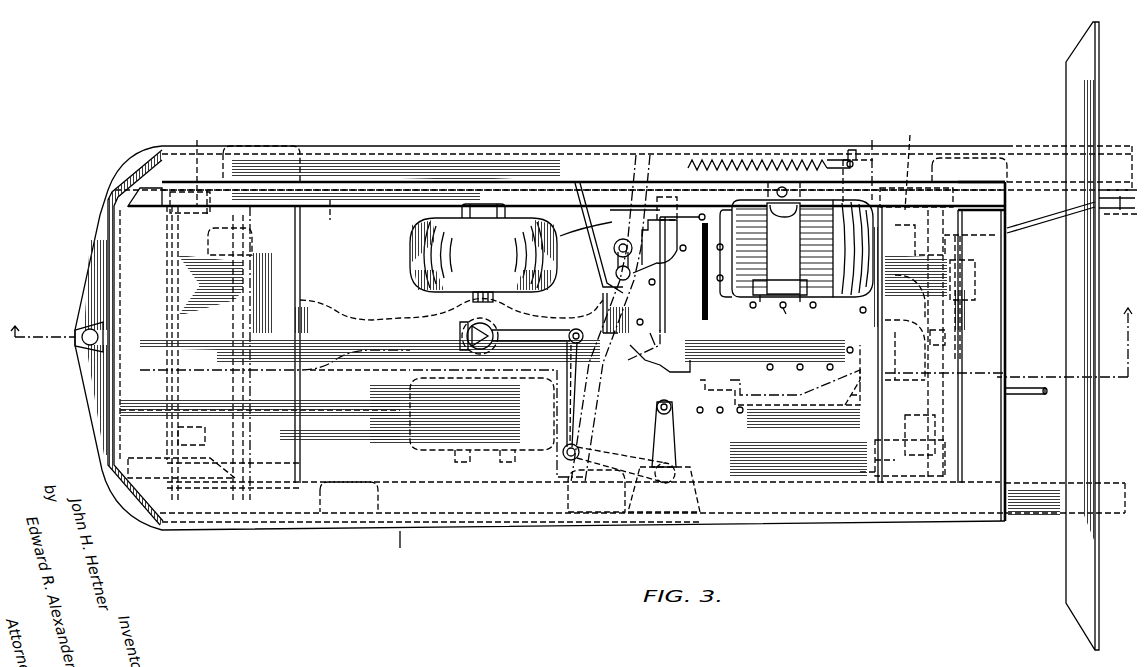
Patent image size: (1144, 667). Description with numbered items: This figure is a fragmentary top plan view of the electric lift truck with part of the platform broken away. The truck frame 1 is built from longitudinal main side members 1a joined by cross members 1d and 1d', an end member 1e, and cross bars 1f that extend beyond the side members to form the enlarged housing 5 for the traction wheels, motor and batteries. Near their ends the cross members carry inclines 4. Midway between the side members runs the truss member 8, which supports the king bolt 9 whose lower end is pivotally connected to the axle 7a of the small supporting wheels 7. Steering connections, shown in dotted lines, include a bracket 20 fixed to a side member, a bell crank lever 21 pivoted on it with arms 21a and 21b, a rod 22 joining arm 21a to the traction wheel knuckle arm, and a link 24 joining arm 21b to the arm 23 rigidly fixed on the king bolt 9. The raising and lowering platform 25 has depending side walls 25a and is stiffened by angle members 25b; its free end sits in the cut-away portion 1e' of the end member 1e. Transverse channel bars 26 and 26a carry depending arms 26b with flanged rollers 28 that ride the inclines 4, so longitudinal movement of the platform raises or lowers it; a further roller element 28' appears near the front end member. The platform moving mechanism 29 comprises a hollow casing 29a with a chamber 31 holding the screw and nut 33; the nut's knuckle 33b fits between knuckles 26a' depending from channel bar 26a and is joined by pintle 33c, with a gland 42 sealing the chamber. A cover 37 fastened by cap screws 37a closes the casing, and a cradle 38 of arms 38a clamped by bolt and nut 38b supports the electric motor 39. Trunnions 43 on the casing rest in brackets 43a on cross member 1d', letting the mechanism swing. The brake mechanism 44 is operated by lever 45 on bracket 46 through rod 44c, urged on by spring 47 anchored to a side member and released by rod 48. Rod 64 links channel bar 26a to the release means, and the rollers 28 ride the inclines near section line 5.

The truck frame 1 is at (1034, 490).
The main side member 1a is at (408, 152).
The cross member 1d is at (581, 332).
The cross member 1d' is at (610, 258).
The end member 1e is at (76, 347).
The cut-away portion 1e' is at (107, 337).
The cross bar 1f is at (1090, 580).
The incline 4 is at (547, 168).
The enlarged housing 5 is at (571, 341).
The supporting wheel 7 is at (410, 250).
The axle 7a is at (473, 298).
The truss member 8 is at (345, 320).
The king bolt 9 is at (460, 334).
The bracket 20 is at (700, 500).
The bell crank lever 21 is at (619, 404).
The arm of bell crank lever 21a is at (676, 445).
The arm of bell crank lever 21b is at (596, 491).
The rod 22 is at (1030, 397).
The arm 23 is at (540, 328).
The link 24 is at (560, 400).
The raising and lowering platform 25 is at (482, 420).
The depending side wall 25a is at (400, 548).
The angle member 25b is at (360, 492).
The channel bar 26 is at (178, 290).
The channel bar 26a is at (940, 345).
The knuckle 26a' is at (945, 297).
The depending arm 26b is at (252, 238).
The roller 28 is at (540, 300).
The front bracket 28' is at (145, 209).
The platform moving mechanism 29 is at (700, 305).
The hollow casing 29a is at (648, 358).
The chamber 31 is at (850, 398).
The nut 33 is at (915, 385).
The knuckle 33b is at (948, 335).
The pintle 33c is at (944, 369).
The cover 37 is at (800, 318).
The cap screw 37a is at (795, 319).
The cradle 38 is at (782, 239).
The cradle arm 38a is at (812, 305).
The clamping bolt and nut 38b is at (784, 187).
The electric motor 39 is at (853, 248).
The gland 42 is at (890, 348).
The trunnion 43 is at (636, 172).
The bracket 43a is at (610, 317).
The brake mechanism 44 is at (625, 240).
The rod 44c is at (616, 265).
The lever 45 is at (613, 248).
The bracket 46 is at (631, 274).
The spring 47 is at (735, 160).
The rod 48 is at (850, 160).
The rod 64 is at (1048, 229).